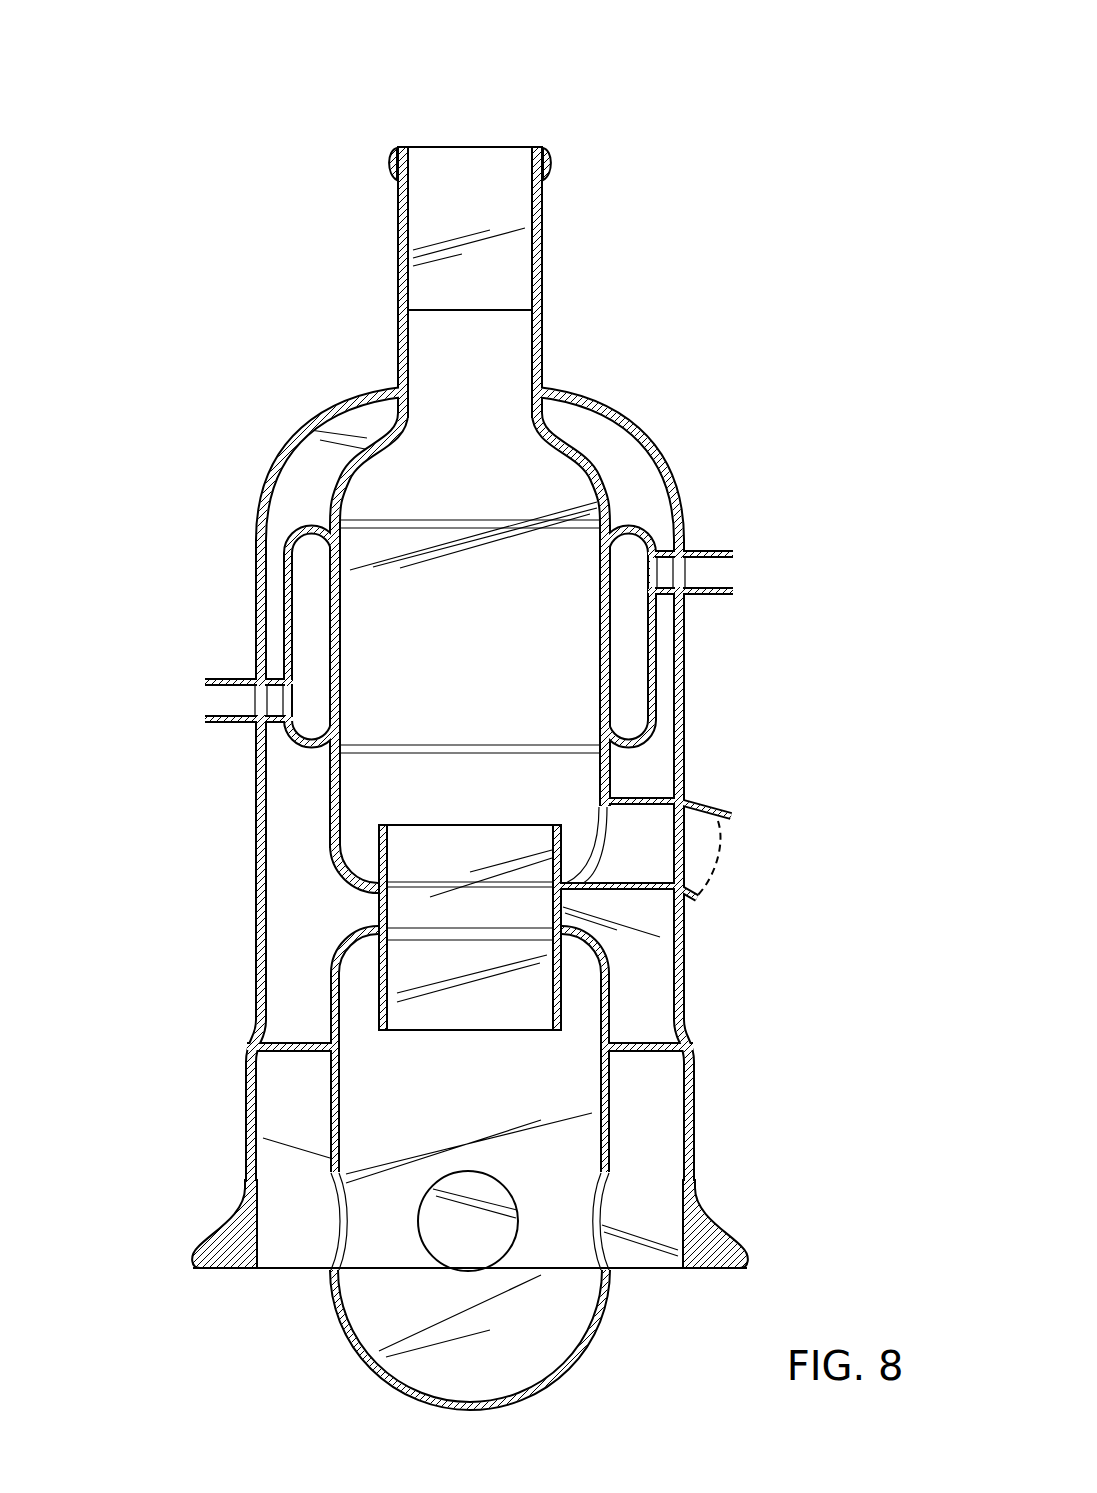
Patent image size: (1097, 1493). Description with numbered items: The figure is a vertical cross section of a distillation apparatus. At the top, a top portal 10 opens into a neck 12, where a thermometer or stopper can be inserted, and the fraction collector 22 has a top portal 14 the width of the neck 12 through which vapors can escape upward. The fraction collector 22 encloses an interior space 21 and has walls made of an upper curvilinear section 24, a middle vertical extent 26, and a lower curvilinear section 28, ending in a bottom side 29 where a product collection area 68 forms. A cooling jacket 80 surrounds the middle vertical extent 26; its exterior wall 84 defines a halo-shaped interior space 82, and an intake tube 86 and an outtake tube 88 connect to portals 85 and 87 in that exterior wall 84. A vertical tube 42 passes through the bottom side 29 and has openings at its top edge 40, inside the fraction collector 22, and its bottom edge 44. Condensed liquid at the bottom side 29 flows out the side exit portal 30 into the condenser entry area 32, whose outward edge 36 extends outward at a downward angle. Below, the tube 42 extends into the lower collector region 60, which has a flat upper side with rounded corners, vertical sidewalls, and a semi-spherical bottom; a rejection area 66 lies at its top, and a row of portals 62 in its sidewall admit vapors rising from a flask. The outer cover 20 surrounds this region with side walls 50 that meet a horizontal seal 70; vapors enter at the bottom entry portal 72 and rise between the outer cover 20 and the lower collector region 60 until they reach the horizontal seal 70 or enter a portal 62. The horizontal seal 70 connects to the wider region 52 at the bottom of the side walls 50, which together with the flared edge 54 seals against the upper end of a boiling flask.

The top portal 10 is at (520, 146).
The neck 12 is at (537, 243).
The top portal of fraction collector 14 is at (532, 305).
The outer cover 20 is at (583, 408).
The interior space of fraction collector 21 is at (383, 588).
The fraction collector 22 is at (377, 472).
The upper curvilinear section 24 is at (597, 462).
The middle vertical extent 26 is at (605, 680).
The lower curvilinear section 28 is at (335, 849).
The bottom side of fraction collector 29 is at (367, 885).
The side exit portal 30 is at (600, 822).
The condenser entry area 32 is at (697, 872).
The outward edge 36 is at (697, 897).
The top edge of tube 40 is at (405, 822).
The tube 42 is at (393, 898).
The bottom edge of tube 44 is at (382, 1030).
The side walls 50 is at (258, 571).
The wider region 52 is at (693, 1107).
The flared edge 54 is at (752, 1247).
The lower collector region 60 is at (580, 1355).
The portals 62 is at (458, 1248).
The rejection area 66 is at (578, 963).
The product collection area 68 is at (357, 855).
The horizontal seal 70 is at (275, 1047).
The bottom entry portal 72 is at (265, 1270).
The cooling jacket 80 is at (655, 560).
The interior space of cooling jacket 82 is at (632, 625).
The exterior wall 84 is at (650, 652).
The intake portal 85 is at (287, 698).
The intake tube 86 is at (210, 696).
The outtake portal 87 is at (650, 567).
The outtake tube 88 is at (725, 578).